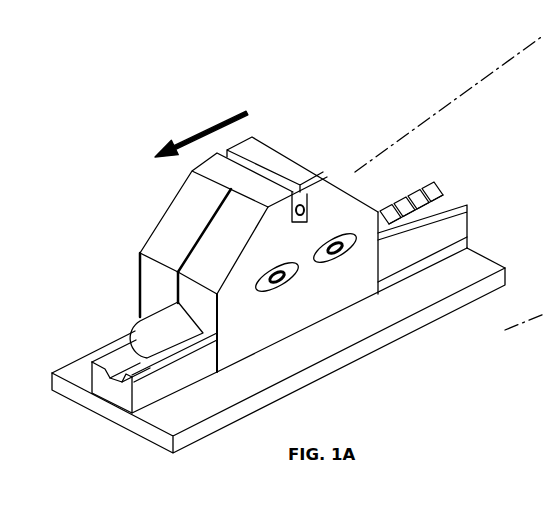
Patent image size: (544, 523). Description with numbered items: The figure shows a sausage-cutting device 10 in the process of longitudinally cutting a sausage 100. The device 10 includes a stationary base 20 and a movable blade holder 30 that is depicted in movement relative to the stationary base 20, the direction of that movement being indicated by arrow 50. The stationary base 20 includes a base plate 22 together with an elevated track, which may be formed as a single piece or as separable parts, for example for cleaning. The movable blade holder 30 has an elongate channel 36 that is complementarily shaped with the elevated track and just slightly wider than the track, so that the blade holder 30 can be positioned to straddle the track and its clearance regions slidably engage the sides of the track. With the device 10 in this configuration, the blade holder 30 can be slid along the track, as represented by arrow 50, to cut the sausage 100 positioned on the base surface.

The sausage-cutting device 10 is at (158, 80).
The stationary base 20 is at (358, 378).
The base plate 22 is at (543, 141).
The movable blade holder 30 is at (318, 160).
The elongate channel 36 is at (188, 317).
The arrow 50 is at (235, 110).
The sausage 100 is at (137, 329).